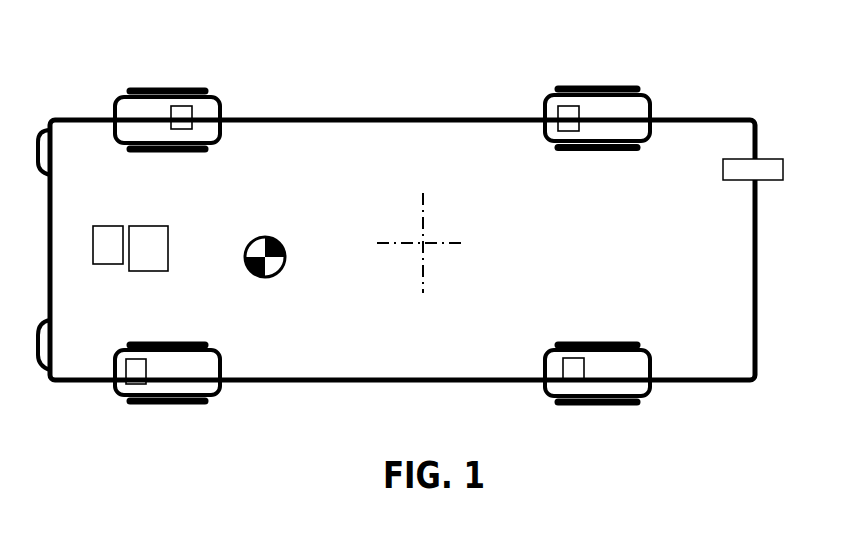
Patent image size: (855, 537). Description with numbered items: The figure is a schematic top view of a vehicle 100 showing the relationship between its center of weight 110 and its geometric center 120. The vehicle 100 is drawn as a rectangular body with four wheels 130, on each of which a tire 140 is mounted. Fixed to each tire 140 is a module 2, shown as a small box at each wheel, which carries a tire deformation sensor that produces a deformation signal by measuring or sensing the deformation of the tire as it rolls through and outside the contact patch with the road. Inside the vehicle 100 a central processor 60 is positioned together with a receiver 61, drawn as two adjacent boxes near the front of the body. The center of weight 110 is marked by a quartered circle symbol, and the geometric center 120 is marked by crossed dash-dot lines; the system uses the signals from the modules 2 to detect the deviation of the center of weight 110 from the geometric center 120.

The vehicle 100 is at (693, 350).
The module 2 is at (197, 118).
The central processor 60 is at (152, 245).
The receiver 61 is at (100, 240).
The center of weight 110 is at (285, 237).
The geometric center 120 is at (423, 240).
The wheel 130 is at (168, 87).
The tire 140 is at (118, 87).